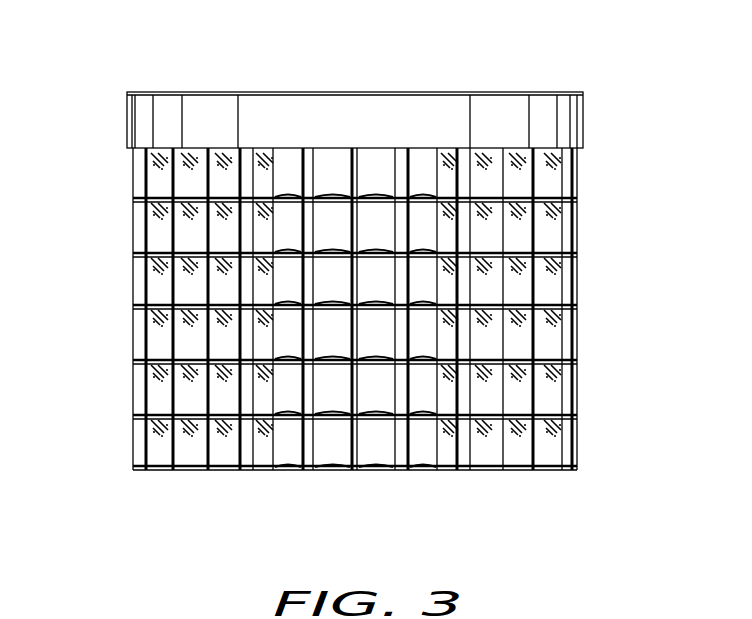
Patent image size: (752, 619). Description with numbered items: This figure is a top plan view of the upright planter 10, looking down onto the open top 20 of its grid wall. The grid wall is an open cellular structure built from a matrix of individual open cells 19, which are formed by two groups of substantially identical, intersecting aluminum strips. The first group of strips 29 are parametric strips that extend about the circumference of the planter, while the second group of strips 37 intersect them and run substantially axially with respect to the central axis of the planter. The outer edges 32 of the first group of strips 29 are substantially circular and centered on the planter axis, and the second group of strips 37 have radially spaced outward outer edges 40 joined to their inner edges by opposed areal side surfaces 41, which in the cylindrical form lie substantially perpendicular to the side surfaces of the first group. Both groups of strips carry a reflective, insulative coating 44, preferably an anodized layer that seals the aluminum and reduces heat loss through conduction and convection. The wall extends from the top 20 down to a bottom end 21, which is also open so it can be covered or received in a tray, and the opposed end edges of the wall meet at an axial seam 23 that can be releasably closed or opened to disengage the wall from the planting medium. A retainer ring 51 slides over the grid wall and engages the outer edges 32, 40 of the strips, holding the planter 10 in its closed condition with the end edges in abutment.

The planter 10 is at (528, 46).
The top 20 is at (277, 92).
The retainer ring 51 is at (415, 112).
The open cells 19 is at (372, 162).
The side surfaces 41 is at (214, 155).
The outer edges 32 is at (137, 298).
The first group of strips 29 is at (571, 248).
The reflective, insulative coating 44 is at (557, 433).
The bottom end 21 is at (188, 472).
The second group of strips 37 is at (304, 455).
The axial seam 23 is at (362, 455).
The outer edges 40 is at (497, 455).